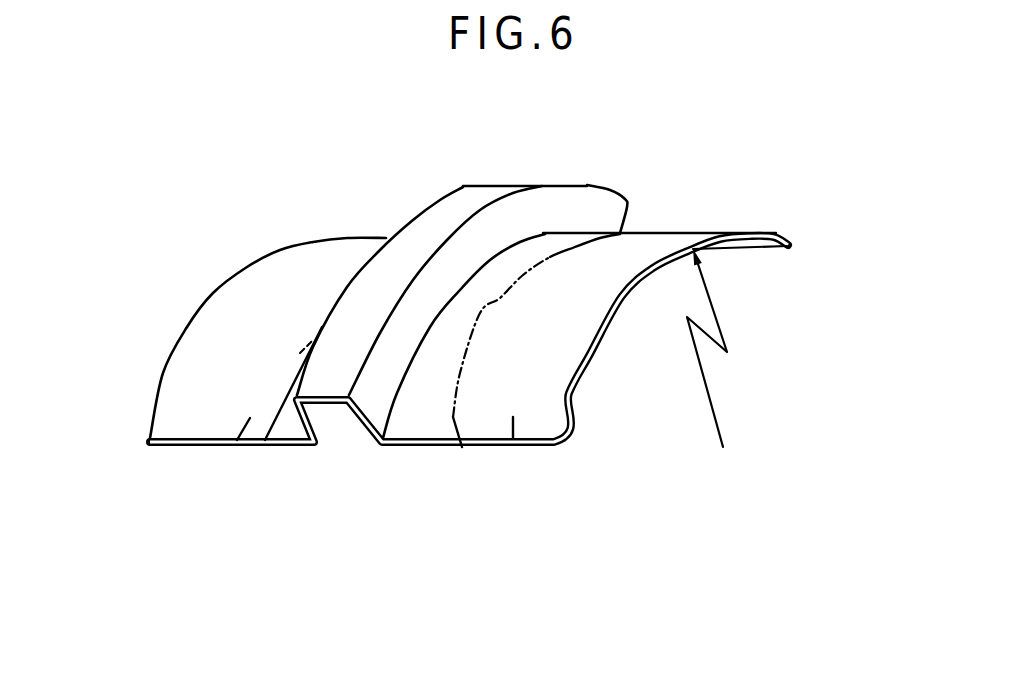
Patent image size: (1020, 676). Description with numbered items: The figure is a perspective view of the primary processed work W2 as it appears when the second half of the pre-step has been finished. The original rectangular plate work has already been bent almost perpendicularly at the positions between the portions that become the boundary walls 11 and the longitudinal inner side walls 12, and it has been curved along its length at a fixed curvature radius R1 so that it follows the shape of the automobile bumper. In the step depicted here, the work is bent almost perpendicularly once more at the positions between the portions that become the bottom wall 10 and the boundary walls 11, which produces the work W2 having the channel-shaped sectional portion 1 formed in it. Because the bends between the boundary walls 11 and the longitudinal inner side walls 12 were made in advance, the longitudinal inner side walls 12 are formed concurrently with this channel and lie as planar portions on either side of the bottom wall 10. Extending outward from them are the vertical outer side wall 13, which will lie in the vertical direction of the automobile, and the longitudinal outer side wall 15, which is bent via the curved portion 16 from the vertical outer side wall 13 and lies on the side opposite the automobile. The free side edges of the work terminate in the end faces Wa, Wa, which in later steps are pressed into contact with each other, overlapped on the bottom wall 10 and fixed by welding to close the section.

The channel-shaped sectional portion 1 is at (504, 182).
The bottom wall 10 is at (419, 229).
The boundary walls 11 is at (317, 415).
The longitudinal inner side walls 12 is at (293, 427).
The vertical outer side wall 13 is at (237, 440).
The longitudinal outer side wall 15 is at (290, 277).
The curved portion 16 is at (263, 337).
The end faces Wa is at (150, 438).
The work W2 is at (684, 226).
The curvature radius R1 is at (732, 348).